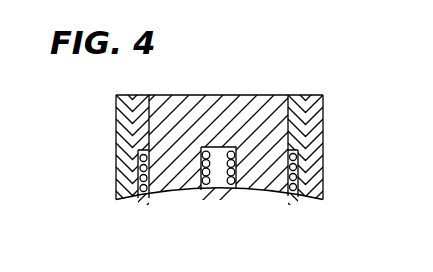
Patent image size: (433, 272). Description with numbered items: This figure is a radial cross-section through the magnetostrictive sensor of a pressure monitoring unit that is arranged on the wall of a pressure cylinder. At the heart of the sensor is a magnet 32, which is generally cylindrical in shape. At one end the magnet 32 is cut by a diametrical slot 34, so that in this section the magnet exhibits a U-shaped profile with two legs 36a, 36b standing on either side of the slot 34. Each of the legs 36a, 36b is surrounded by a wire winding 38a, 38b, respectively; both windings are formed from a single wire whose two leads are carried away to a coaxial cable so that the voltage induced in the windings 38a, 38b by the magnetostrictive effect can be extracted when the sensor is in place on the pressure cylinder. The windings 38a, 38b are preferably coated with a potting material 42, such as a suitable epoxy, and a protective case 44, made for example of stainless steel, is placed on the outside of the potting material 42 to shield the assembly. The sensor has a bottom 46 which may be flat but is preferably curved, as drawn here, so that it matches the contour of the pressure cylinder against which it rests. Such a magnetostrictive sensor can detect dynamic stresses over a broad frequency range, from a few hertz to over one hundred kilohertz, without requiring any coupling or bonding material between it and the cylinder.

The magnet 32 is at (204, 95).
The diametrical slot 34 is at (218, 190).
The leg 36a is at (164, 180).
The leg 36b is at (283, 177).
The wire winding 38a is at (136, 151).
The wire winding 38b is at (297, 201).
The potting material 42 is at (296, 95).
The protective case 44 is at (324, 121).
The bottom 46 is at (165, 193).